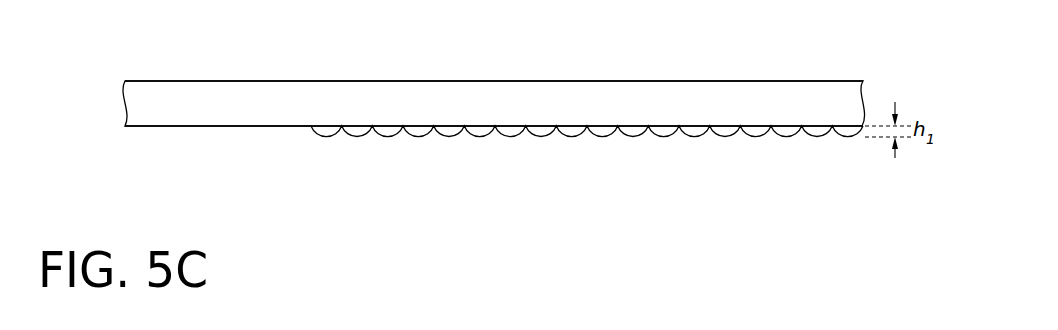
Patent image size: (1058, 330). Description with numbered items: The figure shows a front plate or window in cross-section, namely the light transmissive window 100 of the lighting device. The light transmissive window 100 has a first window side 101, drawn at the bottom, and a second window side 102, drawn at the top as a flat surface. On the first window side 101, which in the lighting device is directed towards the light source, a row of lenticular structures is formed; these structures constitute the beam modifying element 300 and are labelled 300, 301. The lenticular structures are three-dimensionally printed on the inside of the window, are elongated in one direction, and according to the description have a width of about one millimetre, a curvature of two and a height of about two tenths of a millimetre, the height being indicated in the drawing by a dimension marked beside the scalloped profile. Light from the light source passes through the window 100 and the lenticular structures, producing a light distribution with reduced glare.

The light transmissive window 100 is at (112, 114).
The first window side 101 is at (215, 126).
The second window side 102 is at (280, 81).
The beam modifying element 300 is at (587, 178).
The concave surface features 301 is at (634, 160).